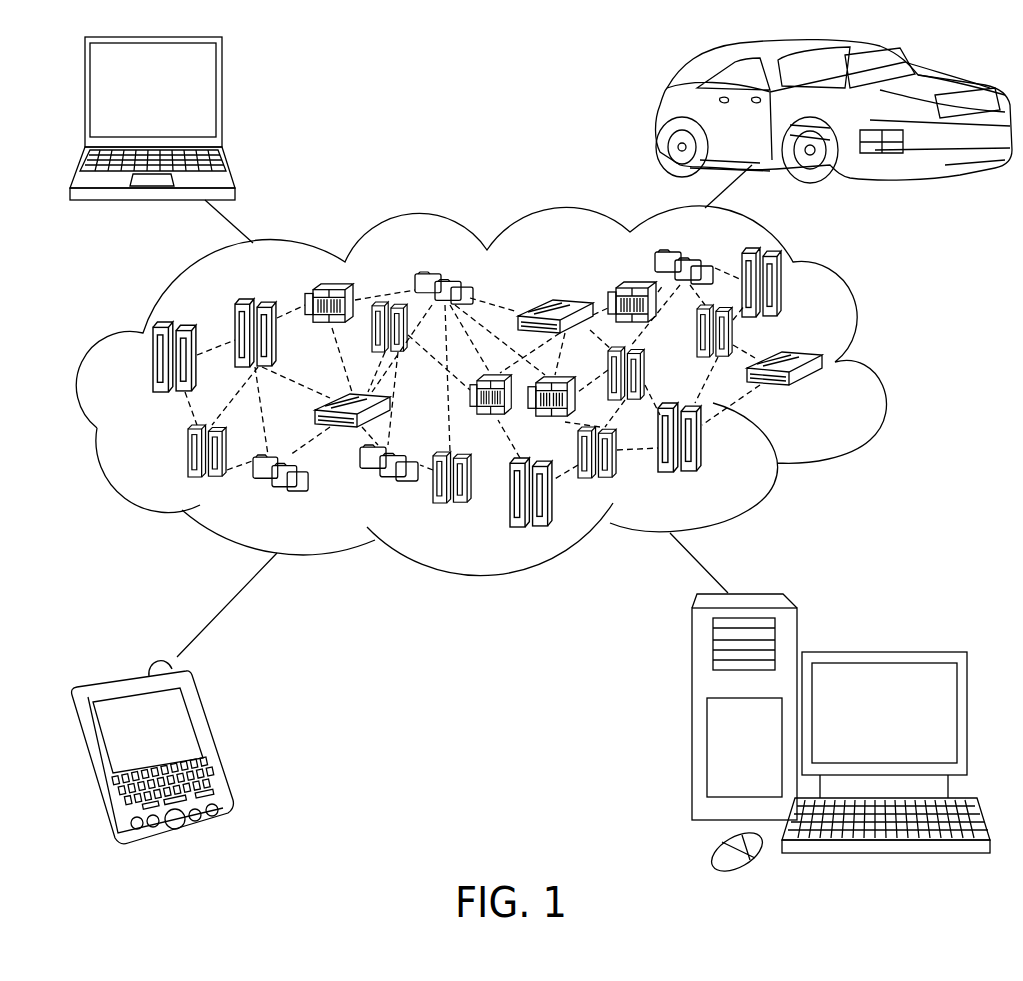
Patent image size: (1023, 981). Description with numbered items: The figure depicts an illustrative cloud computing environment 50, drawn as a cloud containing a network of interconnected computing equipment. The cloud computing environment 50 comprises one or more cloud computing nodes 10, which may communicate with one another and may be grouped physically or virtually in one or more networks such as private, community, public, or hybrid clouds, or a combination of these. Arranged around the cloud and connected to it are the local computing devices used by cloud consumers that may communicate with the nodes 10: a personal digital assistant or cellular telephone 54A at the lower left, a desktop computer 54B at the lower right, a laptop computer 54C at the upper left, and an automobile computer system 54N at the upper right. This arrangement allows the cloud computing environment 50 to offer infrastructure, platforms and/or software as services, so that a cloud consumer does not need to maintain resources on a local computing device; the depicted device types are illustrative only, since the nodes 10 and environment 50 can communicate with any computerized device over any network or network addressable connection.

The cloud computing node 10 is at (508, 431).
The cloud computing environment 50 is at (882, 363).
The personal digital assistant or cellular telephone 54A is at (212, 743).
The desktop computer 54B is at (880, 652).
The laptop computer 54C is at (222, 96).
The automobile computer system 54N is at (662, 114).